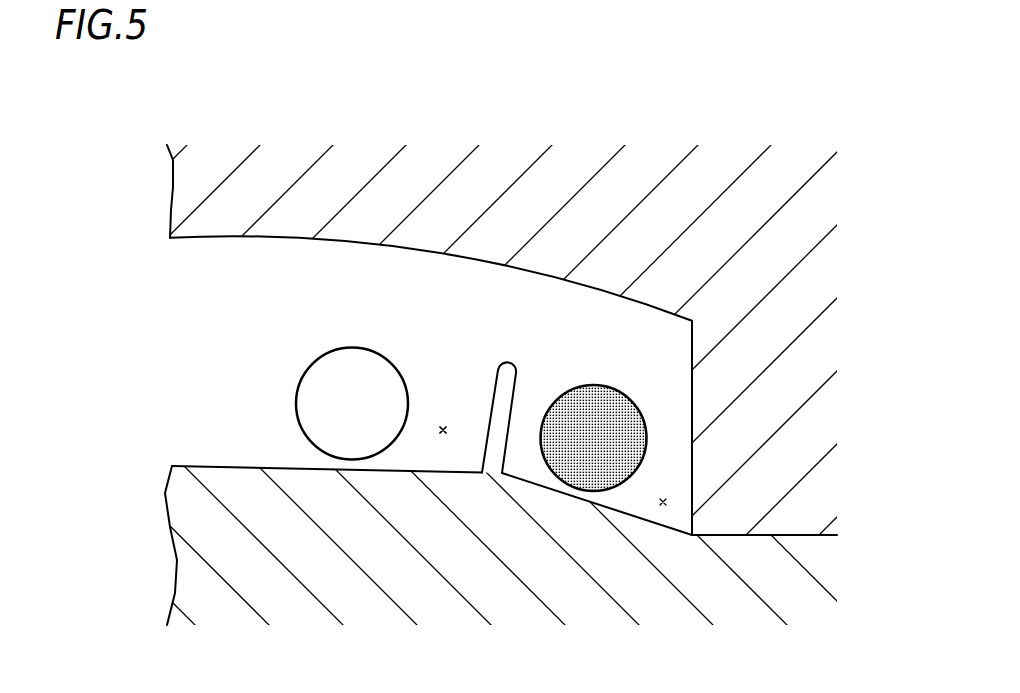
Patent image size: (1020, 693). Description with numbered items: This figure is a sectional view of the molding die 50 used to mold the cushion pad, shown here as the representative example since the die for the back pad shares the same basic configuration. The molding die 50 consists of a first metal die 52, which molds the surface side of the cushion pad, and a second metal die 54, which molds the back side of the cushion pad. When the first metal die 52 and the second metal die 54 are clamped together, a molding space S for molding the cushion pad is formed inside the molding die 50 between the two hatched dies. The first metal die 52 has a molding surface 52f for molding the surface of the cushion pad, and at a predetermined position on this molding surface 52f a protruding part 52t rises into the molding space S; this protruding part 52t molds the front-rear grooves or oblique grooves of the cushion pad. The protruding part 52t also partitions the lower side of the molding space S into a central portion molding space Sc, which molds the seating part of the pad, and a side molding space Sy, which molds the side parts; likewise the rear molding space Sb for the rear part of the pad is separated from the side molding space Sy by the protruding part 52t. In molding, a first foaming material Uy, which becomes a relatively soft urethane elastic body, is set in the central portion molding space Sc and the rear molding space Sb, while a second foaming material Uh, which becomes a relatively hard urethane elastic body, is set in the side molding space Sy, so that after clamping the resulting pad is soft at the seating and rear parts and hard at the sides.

The second metal die 54 is at (303, 198).
The first metal die 52 is at (530, 562).
The molding surface 52f is at (222, 467).
The protruding part 52t is at (503, 385).
The molding die 50 is at (161, 393).
The molding space S is at (262, 299).
The first foaming material Uy is at (328, 388).
The second foaming material Uh is at (578, 418).
The central portion molding space Sc is at (442, 437).
The rear molding space Sb is at (443, 430).
The side molding space Sy is at (663, 507).